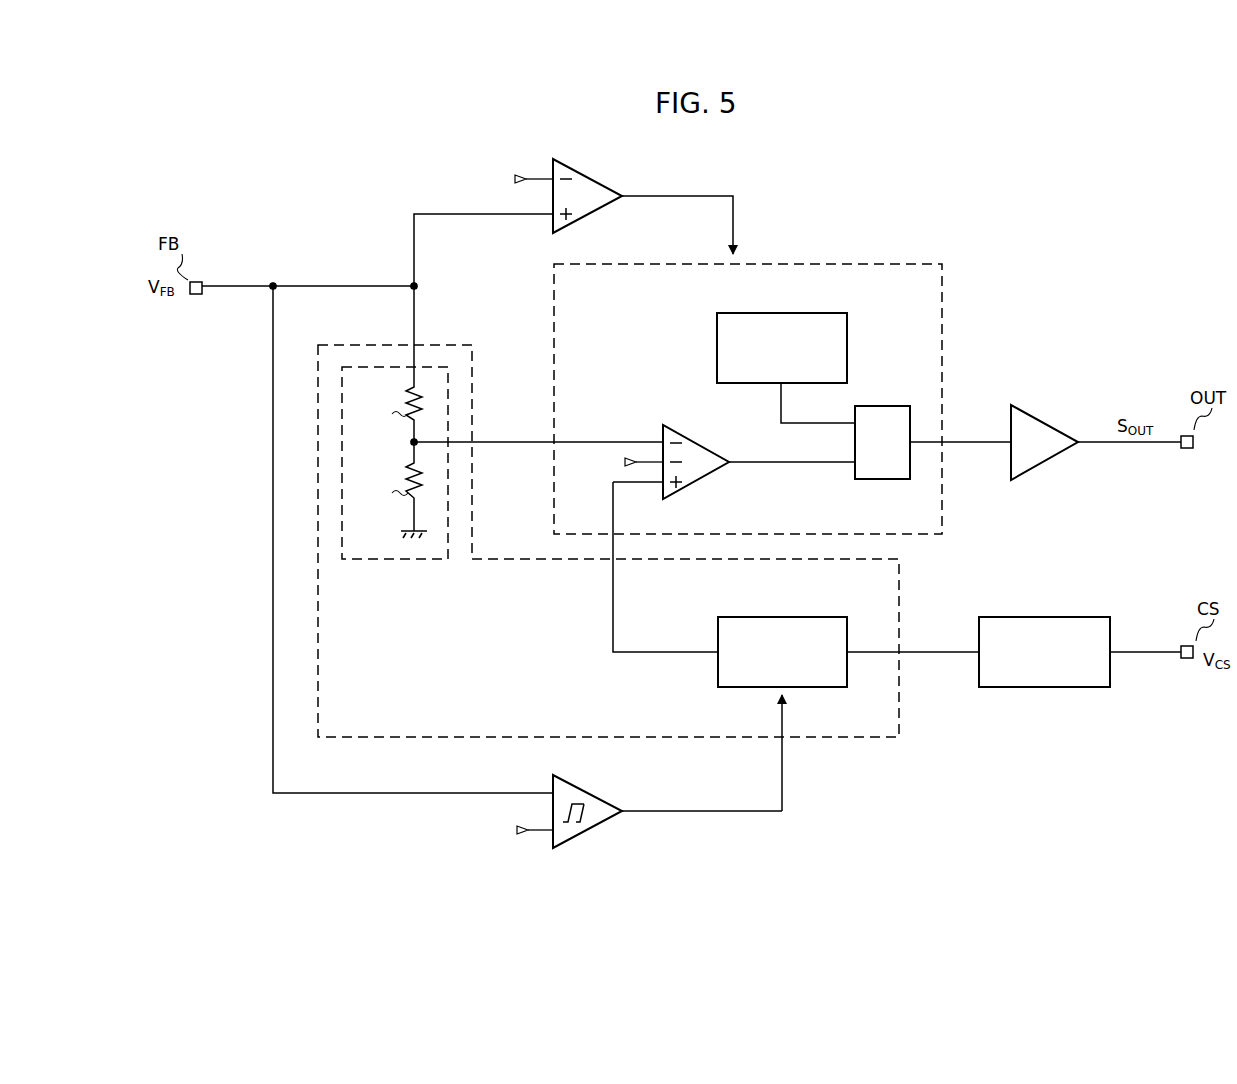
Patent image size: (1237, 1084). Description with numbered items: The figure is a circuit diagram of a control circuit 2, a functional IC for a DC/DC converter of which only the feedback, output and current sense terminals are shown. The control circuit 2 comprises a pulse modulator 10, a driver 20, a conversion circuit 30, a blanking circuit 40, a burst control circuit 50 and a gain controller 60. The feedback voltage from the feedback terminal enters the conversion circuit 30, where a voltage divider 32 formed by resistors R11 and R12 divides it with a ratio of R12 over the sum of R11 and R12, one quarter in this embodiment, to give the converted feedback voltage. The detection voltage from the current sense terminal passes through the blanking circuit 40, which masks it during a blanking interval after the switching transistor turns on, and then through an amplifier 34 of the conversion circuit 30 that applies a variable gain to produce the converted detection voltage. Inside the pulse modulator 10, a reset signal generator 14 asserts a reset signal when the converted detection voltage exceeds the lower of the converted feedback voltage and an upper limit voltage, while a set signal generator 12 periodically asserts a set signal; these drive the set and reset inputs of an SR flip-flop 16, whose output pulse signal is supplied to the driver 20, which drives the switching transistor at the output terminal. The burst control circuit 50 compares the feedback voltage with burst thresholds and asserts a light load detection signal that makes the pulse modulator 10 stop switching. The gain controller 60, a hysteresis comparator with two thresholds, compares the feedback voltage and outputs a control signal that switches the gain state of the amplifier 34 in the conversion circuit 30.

The control circuit 2 is at (702, 908).
The pulse modulator 10 is at (778, 264).
The set signal generator 12 is at (809, 310).
The reset signal generator 14 is at (688, 440).
The SR flip-flop 16 is at (880, 404).
The driver 20 is at (1036, 423).
The conversion circuit 30 is at (861, 738).
The voltage divider 32 is at (372, 562).
The amplifier 34 is at (804, 618).
The blanking circuit 40 is at (1056, 618).
The burst control circuit 50 is at (582, 170).
The gain controller 60 is at (584, 793).
The resistor R11 is at (386, 364).
The resistor R12 is at (386, 486).